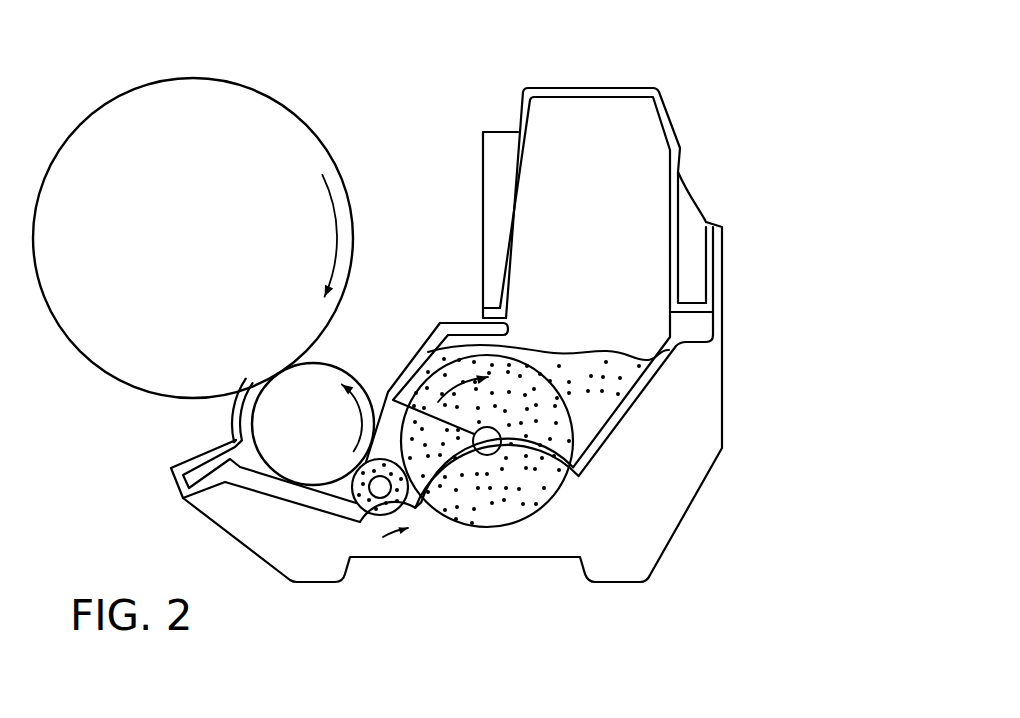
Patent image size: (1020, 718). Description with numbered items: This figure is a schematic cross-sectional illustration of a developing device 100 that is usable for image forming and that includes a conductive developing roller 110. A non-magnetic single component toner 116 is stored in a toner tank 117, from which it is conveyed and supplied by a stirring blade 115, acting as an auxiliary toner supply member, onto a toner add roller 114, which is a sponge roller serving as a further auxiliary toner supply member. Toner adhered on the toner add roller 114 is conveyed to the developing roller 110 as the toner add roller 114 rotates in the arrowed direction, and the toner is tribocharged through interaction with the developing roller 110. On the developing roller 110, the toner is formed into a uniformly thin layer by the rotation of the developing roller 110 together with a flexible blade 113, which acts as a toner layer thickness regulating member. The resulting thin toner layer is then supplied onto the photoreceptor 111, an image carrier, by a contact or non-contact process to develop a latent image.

The developing device 100 is at (703, 515).
The developing roller 110 is at (347, 368).
The photoreceptor 111 is at (243, 82).
The flexible blade 113 is at (387, 392).
The toner add roller 114 is at (366, 512).
The stirring blade 115 is at (487, 428).
The toner 116 is at (598, 370).
The toner tank 117 is at (655, 393).